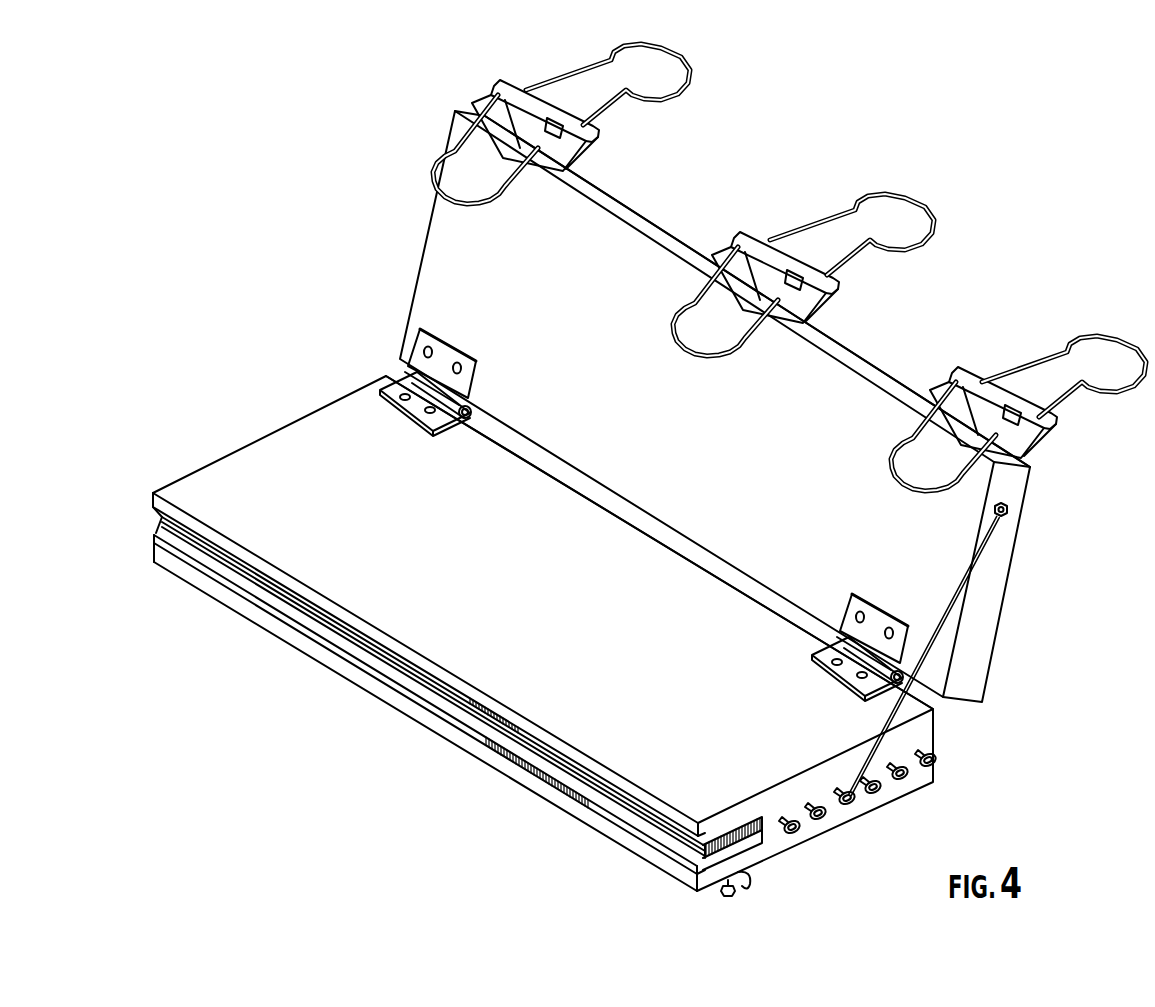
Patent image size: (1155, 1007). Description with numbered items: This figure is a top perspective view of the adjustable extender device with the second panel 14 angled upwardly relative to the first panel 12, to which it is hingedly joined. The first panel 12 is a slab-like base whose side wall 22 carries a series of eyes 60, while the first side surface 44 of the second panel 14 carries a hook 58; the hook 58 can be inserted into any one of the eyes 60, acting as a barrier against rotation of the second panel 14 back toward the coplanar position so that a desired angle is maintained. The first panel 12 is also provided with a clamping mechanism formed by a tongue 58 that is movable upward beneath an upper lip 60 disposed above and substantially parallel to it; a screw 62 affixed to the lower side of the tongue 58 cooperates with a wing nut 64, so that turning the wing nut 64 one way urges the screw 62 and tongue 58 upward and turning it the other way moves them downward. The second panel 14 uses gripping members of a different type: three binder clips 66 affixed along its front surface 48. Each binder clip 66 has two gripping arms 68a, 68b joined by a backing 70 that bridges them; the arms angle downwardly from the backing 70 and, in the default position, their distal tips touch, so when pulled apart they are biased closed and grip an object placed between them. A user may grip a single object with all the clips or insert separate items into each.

The first panel 12 is at (293, 355).
The second panel 14 is at (882, 351).
The side wall 22 is at (780, 840).
The first side surface 44 is at (992, 578).
The front surface 48 is at (662, 233).
The hook 58 is at (933, 640).
The eyes 60 is at (907, 781).
The screw 62 is at (731, 895).
The wing nut 64 is at (742, 876).
The binder clips 66 is at (528, 72).
The gripping arm 68a is at (490, 110).
The gripping arm 68b is at (590, 140).
The backing 70 is at (617, 197).